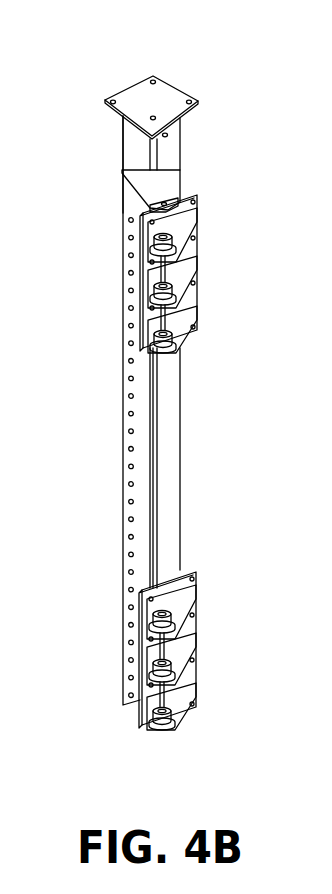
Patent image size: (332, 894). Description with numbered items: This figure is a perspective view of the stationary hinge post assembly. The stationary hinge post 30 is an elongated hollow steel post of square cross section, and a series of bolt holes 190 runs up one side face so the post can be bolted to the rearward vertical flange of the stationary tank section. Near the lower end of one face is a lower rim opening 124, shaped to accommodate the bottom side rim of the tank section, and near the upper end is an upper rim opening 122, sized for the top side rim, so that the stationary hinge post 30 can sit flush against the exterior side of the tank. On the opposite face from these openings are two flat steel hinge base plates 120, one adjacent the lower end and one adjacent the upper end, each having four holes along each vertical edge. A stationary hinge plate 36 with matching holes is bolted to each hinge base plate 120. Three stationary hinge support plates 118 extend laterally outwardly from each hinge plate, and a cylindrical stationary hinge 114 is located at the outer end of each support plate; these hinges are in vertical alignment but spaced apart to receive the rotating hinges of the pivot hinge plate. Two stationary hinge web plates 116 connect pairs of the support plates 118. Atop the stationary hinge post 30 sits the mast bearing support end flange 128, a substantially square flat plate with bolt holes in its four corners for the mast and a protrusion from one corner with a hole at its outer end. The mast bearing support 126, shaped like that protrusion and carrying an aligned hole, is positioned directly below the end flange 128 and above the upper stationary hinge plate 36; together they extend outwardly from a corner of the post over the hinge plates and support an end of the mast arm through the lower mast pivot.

The stationary hinge post 30 is at (123, 423).
The stationary hinge plate 36 is at (210, 278).
The stationary hinge 114 is at (180, 347).
The stationary hinge web plate 116 is at (180, 315).
The stationary hinge support plate 118 is at (197, 272).
The hinge base plate 120 is at (212, 634).
The upper rim opening 122 is at (127, 208).
The lower rim opening 124 is at (158, 635).
The mast bearing support 126 is at (180, 178).
The mast bearing support end flange 128 is at (167, 98).
The bolt holes 190 is at (127, 307).